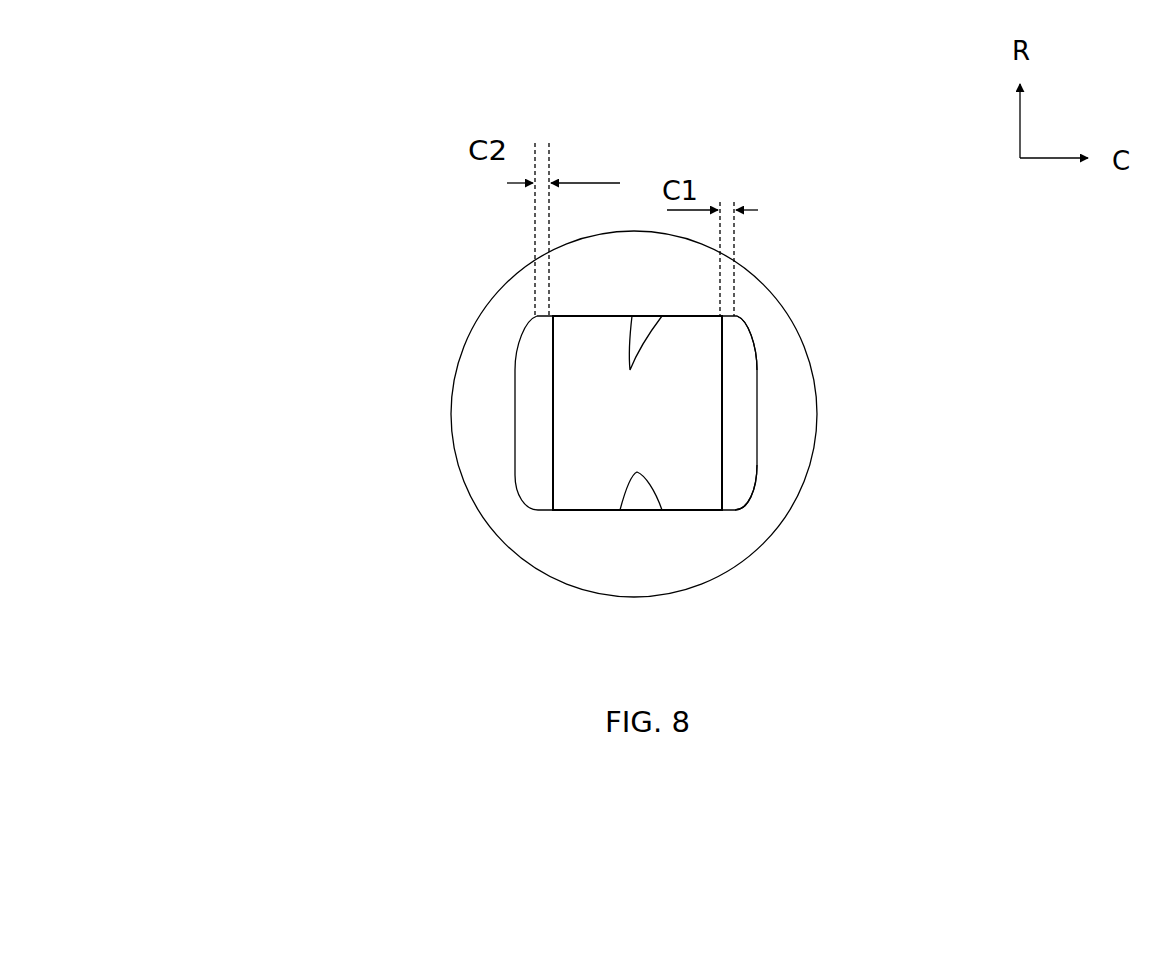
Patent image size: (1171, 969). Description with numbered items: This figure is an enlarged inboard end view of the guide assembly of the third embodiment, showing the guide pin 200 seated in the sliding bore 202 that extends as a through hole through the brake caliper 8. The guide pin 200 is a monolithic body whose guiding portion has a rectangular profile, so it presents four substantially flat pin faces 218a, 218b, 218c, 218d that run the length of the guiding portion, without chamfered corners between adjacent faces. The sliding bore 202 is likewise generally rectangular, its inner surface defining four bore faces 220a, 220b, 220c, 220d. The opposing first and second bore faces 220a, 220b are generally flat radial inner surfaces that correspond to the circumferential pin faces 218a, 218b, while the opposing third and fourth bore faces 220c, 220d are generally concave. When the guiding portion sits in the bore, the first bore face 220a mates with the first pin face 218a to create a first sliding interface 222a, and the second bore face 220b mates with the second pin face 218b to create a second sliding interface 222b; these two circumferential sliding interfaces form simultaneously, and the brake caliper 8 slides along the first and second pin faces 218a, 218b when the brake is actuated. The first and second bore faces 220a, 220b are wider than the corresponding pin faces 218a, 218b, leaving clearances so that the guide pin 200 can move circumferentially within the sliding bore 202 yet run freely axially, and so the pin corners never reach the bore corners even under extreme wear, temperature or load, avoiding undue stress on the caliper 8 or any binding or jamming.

The brake caliper 8 is at (573, 275).
The guide pin 200 is at (648, 422).
The sliding bore 202 is at (740, 462).
The first pin face 218a is at (598, 316).
The second pin face 218b is at (607, 510).
The third pin face 218c is at (552, 372).
The fourth pin face 218d is at (723, 367).
The first bore face 220a is at (632, 316).
The second bore face 220b is at (662, 510).
The third bore face 220c is at (515, 435).
The fourth bore face 220d is at (757, 407).
The first sliding interface 222a is at (751, 309).
The second sliding interface 222b is at (749, 522).